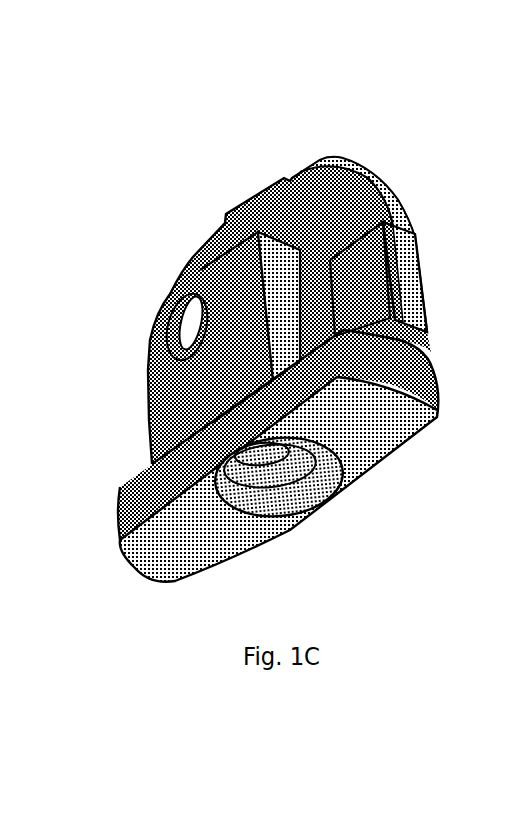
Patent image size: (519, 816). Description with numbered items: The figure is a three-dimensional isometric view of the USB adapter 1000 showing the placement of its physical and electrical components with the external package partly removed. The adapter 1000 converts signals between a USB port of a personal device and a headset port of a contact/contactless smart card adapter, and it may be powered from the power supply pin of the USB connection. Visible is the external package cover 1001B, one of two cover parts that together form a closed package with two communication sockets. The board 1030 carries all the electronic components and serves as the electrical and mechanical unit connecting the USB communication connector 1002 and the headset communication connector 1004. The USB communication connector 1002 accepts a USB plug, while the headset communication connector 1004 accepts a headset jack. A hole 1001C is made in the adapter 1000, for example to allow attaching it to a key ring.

The USB adapter 1000 is at (102, 108).
The hole 1001C is at (160, 312).
The board 1030 is at (341, 145).
The USB communication connector 1002 is at (418, 248).
The external package cover 1001B is at (410, 417).
The headset communication connector 1004 is at (317, 500).